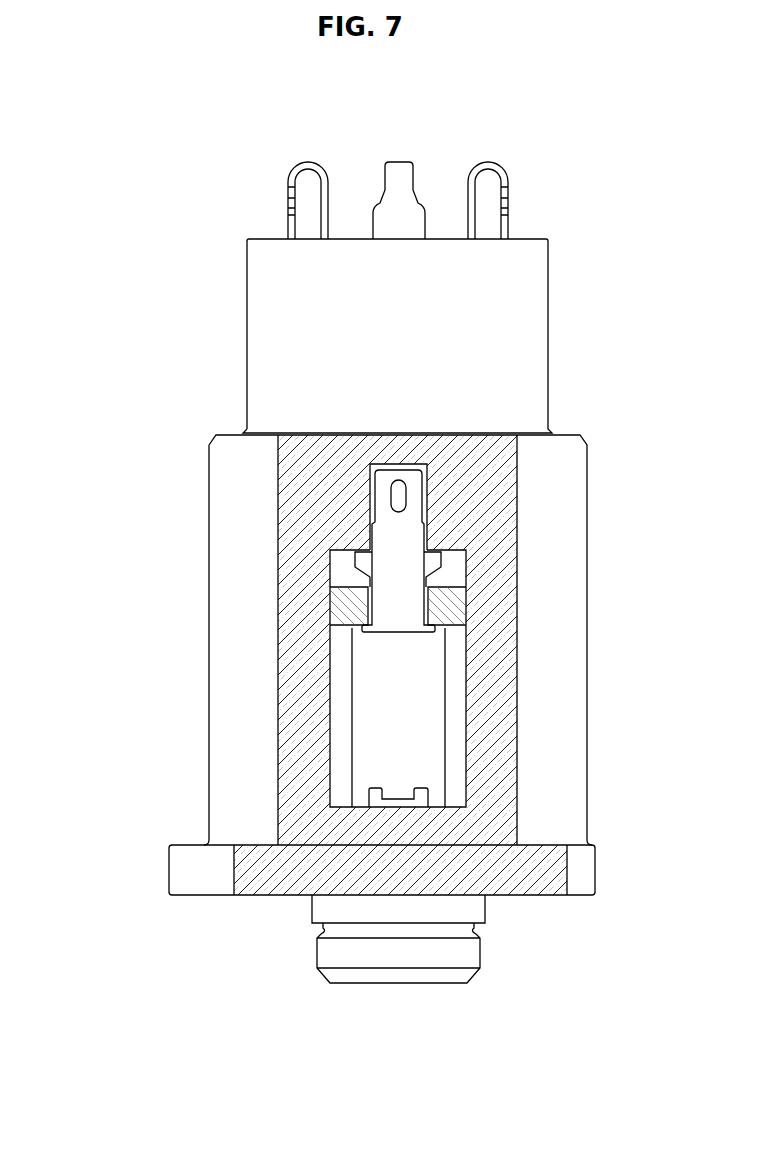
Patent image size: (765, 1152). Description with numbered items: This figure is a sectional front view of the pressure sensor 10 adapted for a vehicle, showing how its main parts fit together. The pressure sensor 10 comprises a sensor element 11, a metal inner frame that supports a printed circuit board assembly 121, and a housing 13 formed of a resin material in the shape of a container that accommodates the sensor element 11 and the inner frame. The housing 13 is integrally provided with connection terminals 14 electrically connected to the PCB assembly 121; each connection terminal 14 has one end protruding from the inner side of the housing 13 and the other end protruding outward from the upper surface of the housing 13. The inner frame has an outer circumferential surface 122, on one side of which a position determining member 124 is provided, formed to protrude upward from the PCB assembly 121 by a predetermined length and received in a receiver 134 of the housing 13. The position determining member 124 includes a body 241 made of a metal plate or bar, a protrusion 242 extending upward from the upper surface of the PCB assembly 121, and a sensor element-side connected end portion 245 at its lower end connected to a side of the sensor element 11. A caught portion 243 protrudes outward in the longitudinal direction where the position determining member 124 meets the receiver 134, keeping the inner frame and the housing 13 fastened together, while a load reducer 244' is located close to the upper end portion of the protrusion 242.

The pressure sensor 10 is at (413, 118).
The sensor element 11 is at (173, 870).
The housing 13 is at (527, 348).
The connection terminal 14 is at (502, 173).
The printed circuit board assembly 121 is at (453, 605).
The outer circumferential surface 122 is at (453, 707).
The position determining member 124 is at (123, 512).
The receiver 134 is at (383, 468).
The body 241 is at (373, 708).
The protrusion 242 is at (393, 528).
The caught portion 243 is at (367, 556).
The load reducer 244' is at (261, 510).
The sensor element-side connected end portion 245 is at (398, 799).